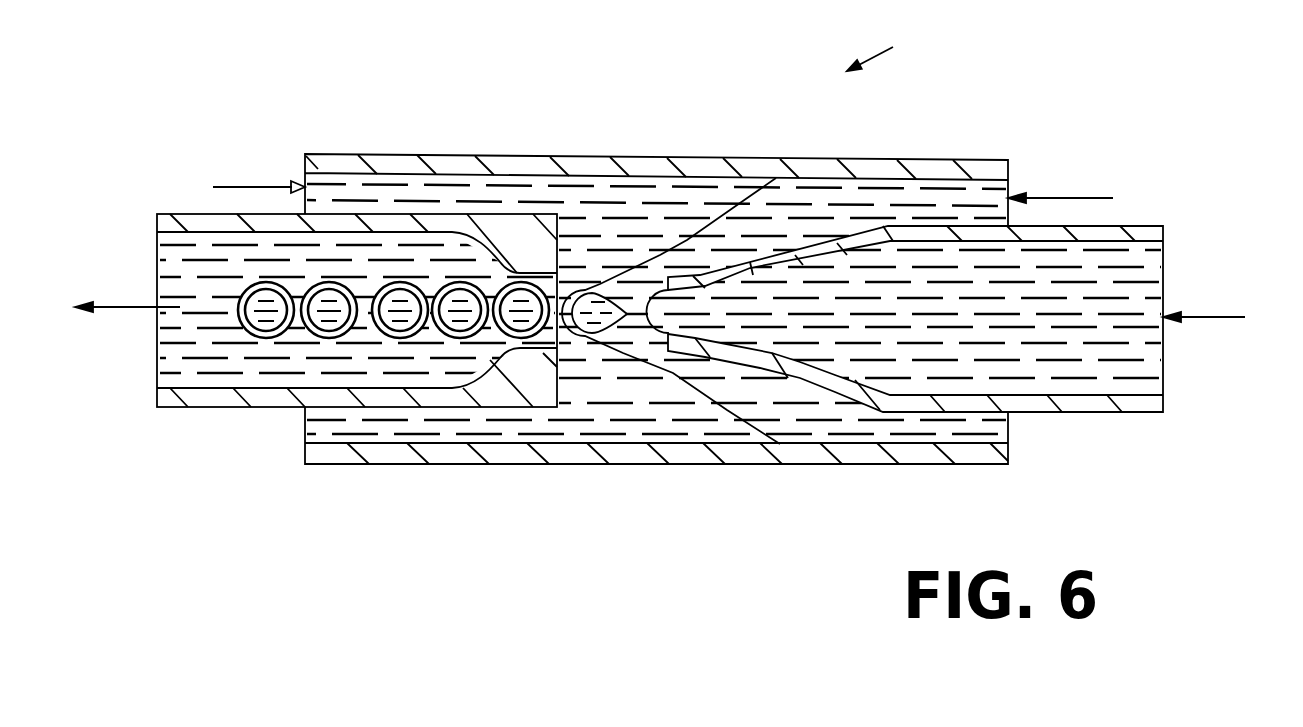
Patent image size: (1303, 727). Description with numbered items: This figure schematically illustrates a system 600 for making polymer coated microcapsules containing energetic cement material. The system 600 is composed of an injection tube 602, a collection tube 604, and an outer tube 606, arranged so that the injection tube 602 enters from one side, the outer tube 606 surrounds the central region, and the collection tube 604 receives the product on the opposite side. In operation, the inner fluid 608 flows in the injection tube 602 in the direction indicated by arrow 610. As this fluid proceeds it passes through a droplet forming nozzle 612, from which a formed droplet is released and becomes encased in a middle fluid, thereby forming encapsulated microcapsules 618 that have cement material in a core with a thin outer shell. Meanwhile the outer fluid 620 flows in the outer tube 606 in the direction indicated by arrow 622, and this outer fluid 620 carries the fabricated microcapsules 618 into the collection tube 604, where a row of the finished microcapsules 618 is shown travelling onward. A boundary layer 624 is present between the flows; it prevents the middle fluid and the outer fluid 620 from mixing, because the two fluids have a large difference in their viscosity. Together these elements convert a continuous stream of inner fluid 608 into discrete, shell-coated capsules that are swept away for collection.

The system for making encapsulated cement material 600 is at (914, 46).
The injection tube 602 is at (1135, 227).
The collection tube 604 is at (252, 408).
The outer tube 606 is at (467, 465).
The inner fluid 608 is at (1143, 377).
The arrow 610 is at (1205, 317).
The droplet forming nozzle 612 is at (678, 275).
The encapsulated microcapsules 618 is at (410, 283).
The outer fluid 620 is at (833, 207).
The arrow 622 is at (1073, 198).
The boundary layer 624 is at (677, 383).